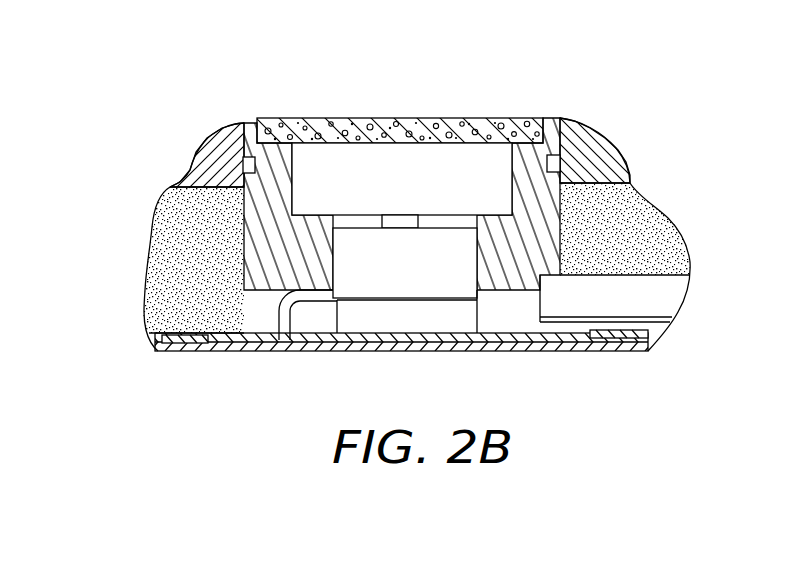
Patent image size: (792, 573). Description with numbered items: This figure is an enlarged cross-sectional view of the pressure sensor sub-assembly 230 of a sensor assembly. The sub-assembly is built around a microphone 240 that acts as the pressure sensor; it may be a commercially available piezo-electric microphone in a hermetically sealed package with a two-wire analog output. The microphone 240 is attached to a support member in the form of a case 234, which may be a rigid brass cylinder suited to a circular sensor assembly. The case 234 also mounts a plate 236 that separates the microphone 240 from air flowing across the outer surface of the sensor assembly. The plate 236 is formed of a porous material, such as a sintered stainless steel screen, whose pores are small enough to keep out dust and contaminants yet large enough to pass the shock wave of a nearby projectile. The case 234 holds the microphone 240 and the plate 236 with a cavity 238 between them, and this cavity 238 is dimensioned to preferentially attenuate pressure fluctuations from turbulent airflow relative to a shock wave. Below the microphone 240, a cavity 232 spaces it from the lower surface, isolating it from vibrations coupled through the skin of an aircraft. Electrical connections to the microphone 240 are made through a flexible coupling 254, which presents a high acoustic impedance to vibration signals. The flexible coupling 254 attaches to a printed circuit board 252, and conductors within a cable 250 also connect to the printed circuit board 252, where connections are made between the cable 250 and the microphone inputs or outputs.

The pressure sensor sub-assembly 230 is at (212, 112).
The cavity 232 is at (420, 315).
The case 234 is at (270, 267).
The plate 236 is at (397, 118).
The cavity 238 is at (420, 193).
The microphone 240 is at (420, 268).
The cable 250 is at (672, 294).
The printed circuit board 252 is at (190, 345).
The flexible coupling 254 is at (298, 301).